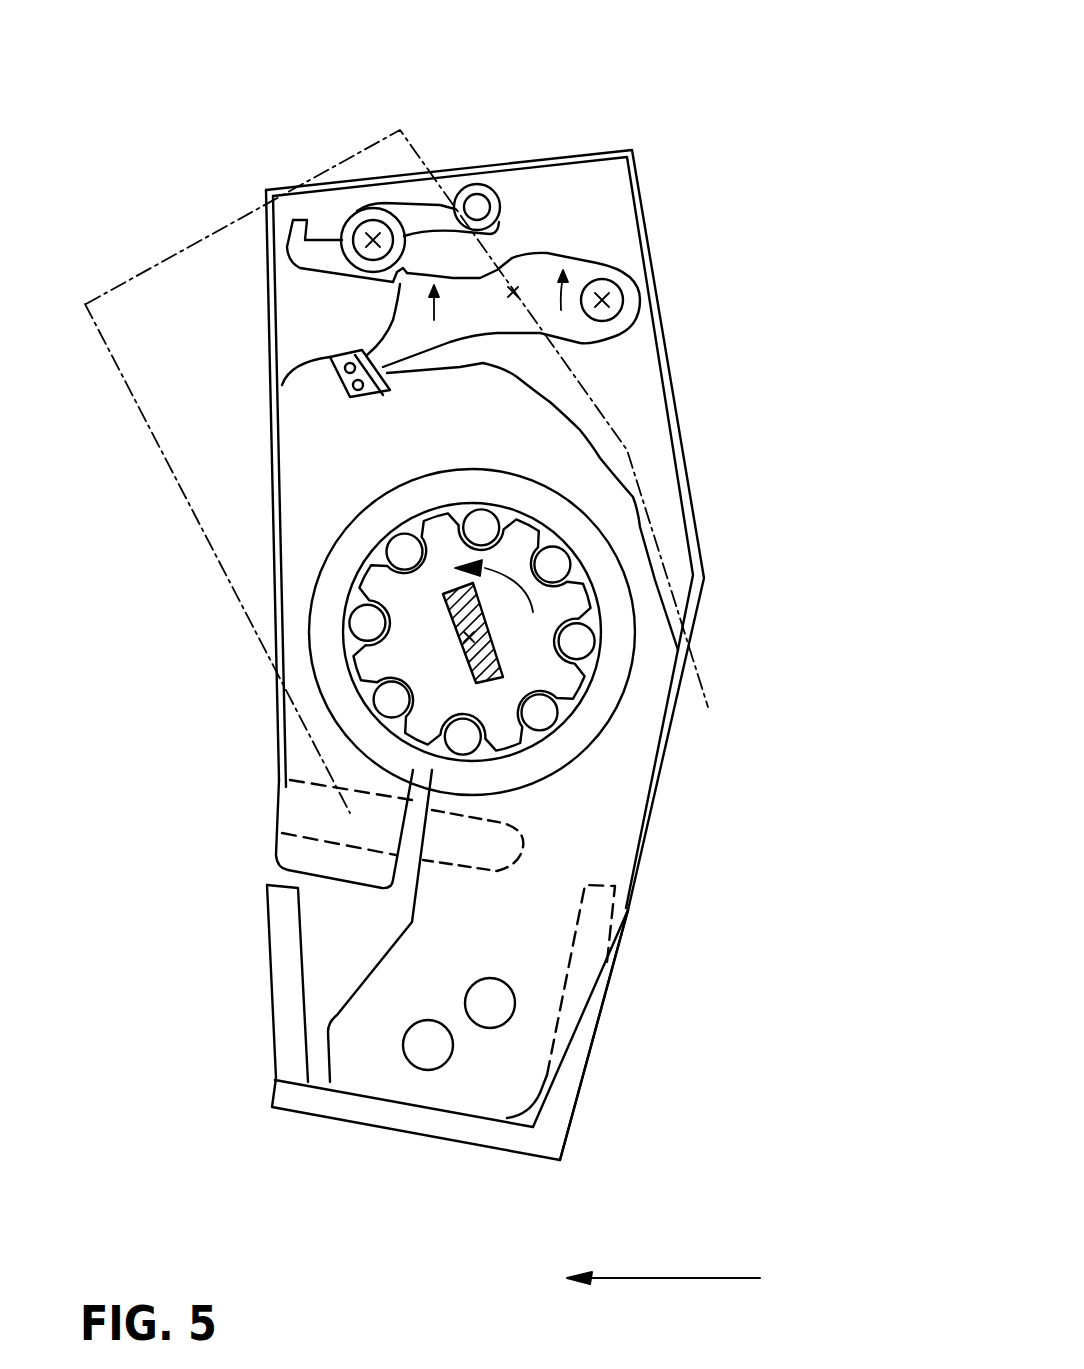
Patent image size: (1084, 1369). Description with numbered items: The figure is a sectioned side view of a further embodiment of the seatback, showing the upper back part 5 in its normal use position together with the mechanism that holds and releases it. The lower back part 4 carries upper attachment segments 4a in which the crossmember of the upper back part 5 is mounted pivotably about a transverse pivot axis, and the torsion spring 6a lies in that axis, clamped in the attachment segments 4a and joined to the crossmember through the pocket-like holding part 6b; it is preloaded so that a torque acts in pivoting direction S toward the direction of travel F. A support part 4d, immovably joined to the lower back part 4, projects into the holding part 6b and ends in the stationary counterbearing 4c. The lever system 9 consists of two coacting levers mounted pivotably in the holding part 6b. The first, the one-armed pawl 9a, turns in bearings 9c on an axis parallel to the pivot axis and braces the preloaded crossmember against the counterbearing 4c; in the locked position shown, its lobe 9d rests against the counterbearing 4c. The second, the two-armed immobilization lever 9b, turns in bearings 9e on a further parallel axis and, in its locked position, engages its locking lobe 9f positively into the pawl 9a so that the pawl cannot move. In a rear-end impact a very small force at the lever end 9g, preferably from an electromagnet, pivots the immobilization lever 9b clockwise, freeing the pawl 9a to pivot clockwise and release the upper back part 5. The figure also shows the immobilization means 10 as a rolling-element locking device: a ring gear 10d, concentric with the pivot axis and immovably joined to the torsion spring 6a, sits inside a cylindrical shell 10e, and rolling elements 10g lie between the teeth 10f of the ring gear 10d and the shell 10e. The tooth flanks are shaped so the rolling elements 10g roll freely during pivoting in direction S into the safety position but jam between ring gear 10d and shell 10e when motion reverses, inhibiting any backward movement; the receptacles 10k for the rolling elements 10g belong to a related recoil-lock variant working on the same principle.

The lower back part 4 is at (402, 1142).
The upper attachment segment 4a is at (647, 230).
The counterbearing 4c is at (377, 393).
The support part 4d is at (348, 1043).
The upper back part 5 is at (697, 333).
The torsion spring 6a is at (443, 597).
The holding part 6b is at (607, 207).
The lever system 9 is at (597, 58).
The pawl 9a is at (513, 290).
The immobilization lever 9b is at (422, 201).
The bearing 9c is at (607, 320).
The lobe 9d is at (387, 345).
The bearing 9e is at (355, 212).
The locking lobe 9f is at (393, 281).
The lever end 9g is at (478, 200).
The immobilization means 10 is at (511, 658).
The ring gear 10d is at (527, 645).
The cylindrical shell 10e is at (612, 588).
The teeth 10f is at (363, 668).
The rolling elements 10g is at (380, 700).
The receptacles 10k is at (400, 732).
The direction of travel F is at (683, 1277).